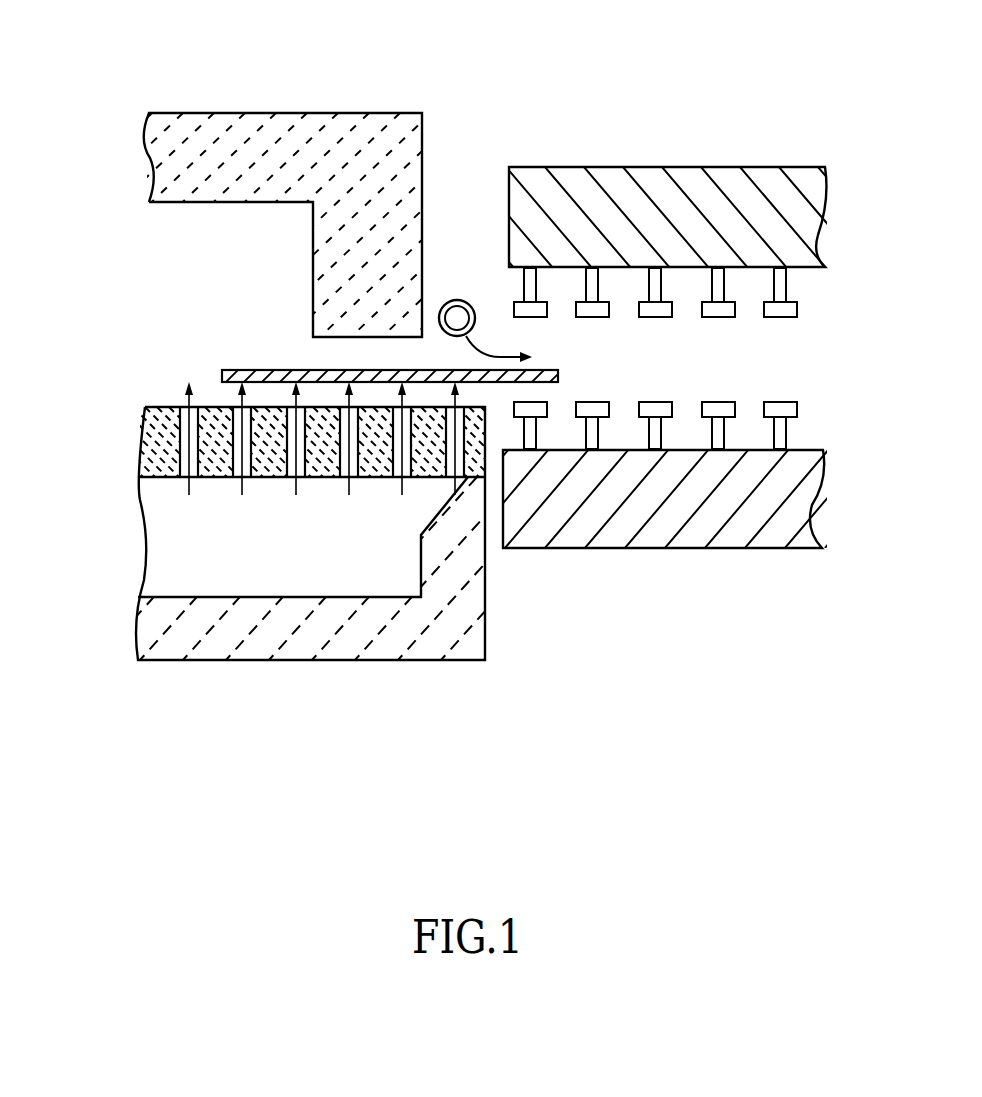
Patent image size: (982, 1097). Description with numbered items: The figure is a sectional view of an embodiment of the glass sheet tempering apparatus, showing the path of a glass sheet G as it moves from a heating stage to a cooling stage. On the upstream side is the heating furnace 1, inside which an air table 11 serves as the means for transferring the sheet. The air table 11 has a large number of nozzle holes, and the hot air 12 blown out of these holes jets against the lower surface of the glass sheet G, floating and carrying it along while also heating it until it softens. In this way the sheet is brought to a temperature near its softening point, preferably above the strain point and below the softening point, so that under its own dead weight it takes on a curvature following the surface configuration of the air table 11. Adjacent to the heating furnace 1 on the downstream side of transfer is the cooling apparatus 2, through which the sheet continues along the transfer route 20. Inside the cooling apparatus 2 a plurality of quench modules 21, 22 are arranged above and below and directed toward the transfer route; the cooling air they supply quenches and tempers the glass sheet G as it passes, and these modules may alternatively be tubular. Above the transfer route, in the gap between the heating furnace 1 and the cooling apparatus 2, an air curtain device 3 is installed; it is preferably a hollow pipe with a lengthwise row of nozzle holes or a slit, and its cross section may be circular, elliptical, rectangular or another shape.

The heating furnace 1 is at (346, 95).
The cooling apparatus 2 is at (669, 148).
The lower electrode plate 20 is at (667, 498).
The air curtain device 3 is at (456, 300).
The air table 11 is at (137, 436).
The hot air 12 is at (295, 485).
The quench module 21 is at (798, 403).
The quench module 22 is at (797, 305).
The glass sheet G is at (287, 372).